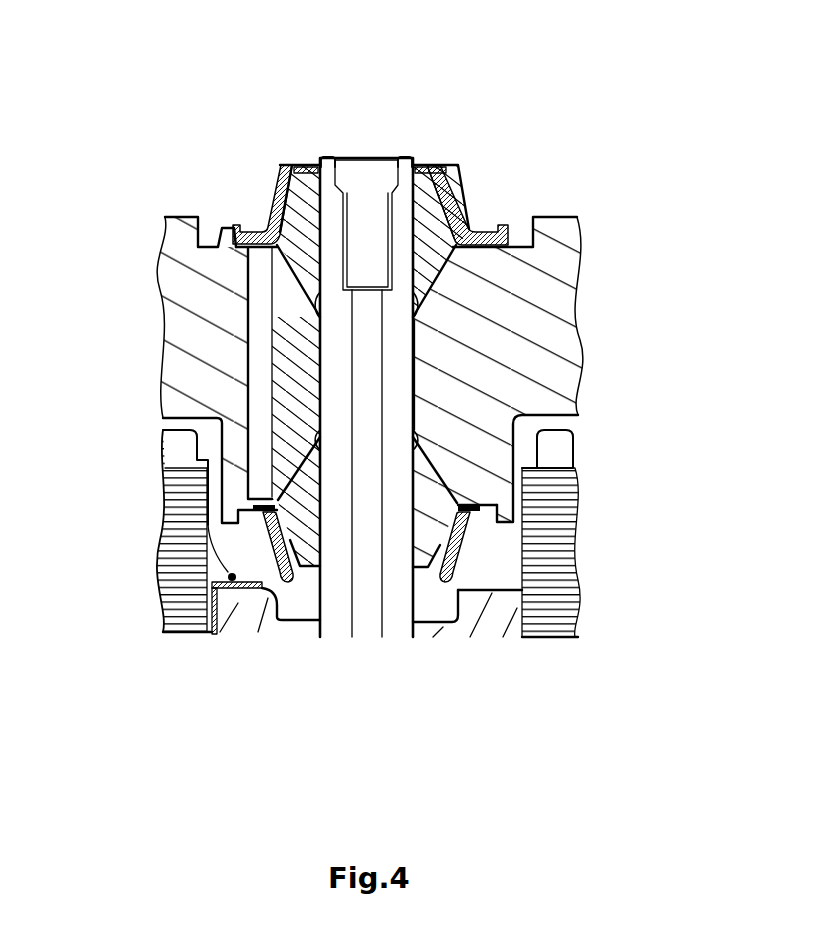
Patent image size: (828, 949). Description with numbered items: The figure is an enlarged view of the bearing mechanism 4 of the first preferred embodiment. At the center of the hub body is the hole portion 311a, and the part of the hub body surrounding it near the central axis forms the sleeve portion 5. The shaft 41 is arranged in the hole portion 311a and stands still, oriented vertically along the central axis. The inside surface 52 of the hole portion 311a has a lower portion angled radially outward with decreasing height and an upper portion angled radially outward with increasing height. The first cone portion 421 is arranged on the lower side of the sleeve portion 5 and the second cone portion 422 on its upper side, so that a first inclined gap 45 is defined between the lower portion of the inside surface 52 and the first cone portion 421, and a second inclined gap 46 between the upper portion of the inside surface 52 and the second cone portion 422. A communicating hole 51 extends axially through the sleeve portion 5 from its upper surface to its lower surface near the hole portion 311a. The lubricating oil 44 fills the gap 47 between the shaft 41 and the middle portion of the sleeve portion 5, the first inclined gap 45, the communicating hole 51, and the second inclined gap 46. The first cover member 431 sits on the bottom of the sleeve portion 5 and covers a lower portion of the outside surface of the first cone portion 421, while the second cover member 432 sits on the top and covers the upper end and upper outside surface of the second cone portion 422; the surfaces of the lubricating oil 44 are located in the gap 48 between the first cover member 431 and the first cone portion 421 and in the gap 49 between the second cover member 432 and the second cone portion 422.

The bearing mechanism 4 is at (235, 64).
The shaft 41 is at (397, 607).
The first cone portion 421 is at (430, 527).
The second cone portion 422 is at (427, 195).
The first cover member 431 is at (291, 548).
The second cover member 432 is at (236, 229).
The lubricating oil 44 is at (253, 224).
The first inclined gap 45 is at (446, 469).
The second inclined gap 46 is at (433, 302).
The gap 47 is at (417, 358).
The gap 48 is at (297, 566).
The gap 49 is at (283, 163).
The sleeve portion 5 is at (512, 272).
The communicating hole 51 is at (247, 362).
The inside surface 52 is at (416, 255).
The hole portion 311a is at (444, 234).